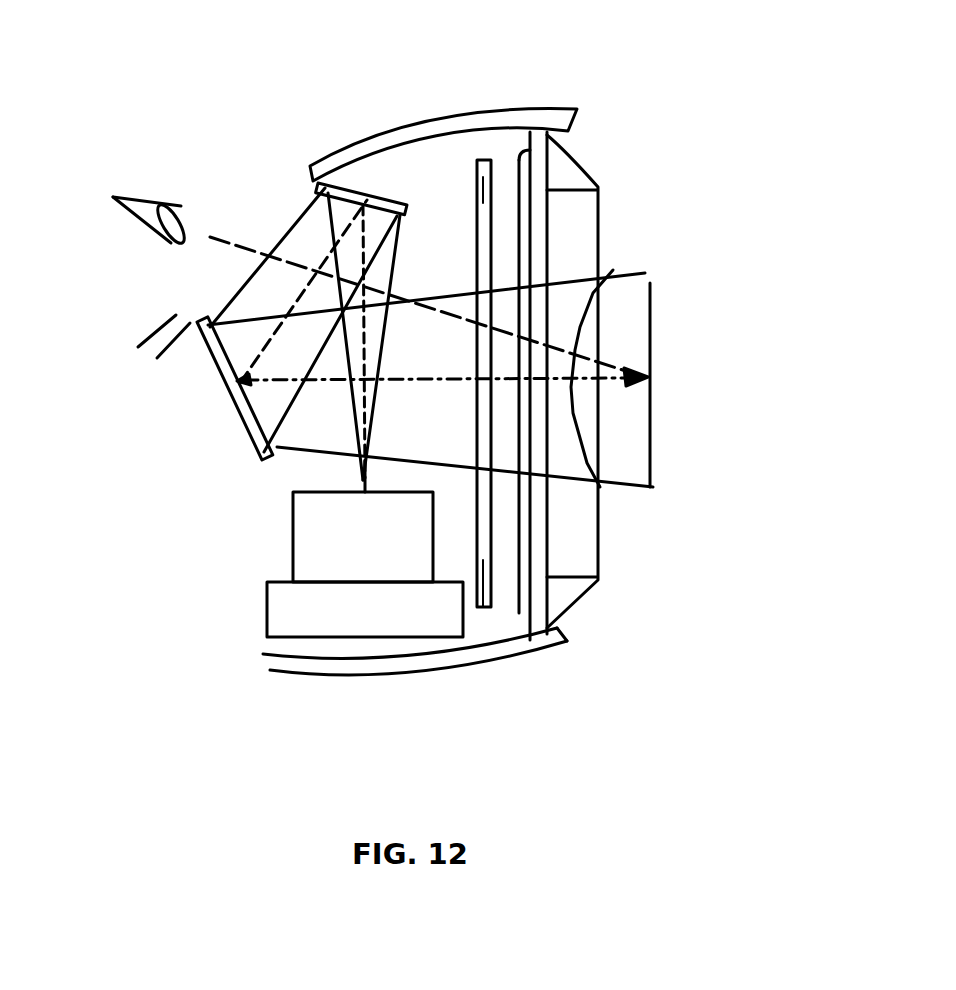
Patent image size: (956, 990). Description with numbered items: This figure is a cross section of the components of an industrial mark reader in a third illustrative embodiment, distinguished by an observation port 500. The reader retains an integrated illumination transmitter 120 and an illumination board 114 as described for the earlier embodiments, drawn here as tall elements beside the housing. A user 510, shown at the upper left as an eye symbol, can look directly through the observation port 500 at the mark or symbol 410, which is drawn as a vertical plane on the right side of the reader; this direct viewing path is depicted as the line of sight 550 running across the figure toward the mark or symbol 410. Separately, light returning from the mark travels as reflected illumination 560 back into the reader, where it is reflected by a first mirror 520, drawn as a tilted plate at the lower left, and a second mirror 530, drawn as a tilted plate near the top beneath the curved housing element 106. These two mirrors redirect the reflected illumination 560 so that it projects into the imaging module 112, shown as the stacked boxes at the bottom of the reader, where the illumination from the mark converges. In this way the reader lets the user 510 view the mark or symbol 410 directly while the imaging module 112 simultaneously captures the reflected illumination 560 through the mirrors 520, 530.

The observation port 500 is at (256, 154).
The user 510 is at (120, 231).
The first mirror 520 is at (217, 387).
The second mirror 530 is at (335, 189).
The curved housing top 106 is at (441, 103).
The imaging module 112 is at (263, 609).
The illumination board 114 is at (490, 607).
The illumination transmitter 120 is at (577, 582).
The mark or symbol 410 is at (650, 403).
The line of sight 550 is at (613, 270).
The reflected illumination 560 is at (600, 487).